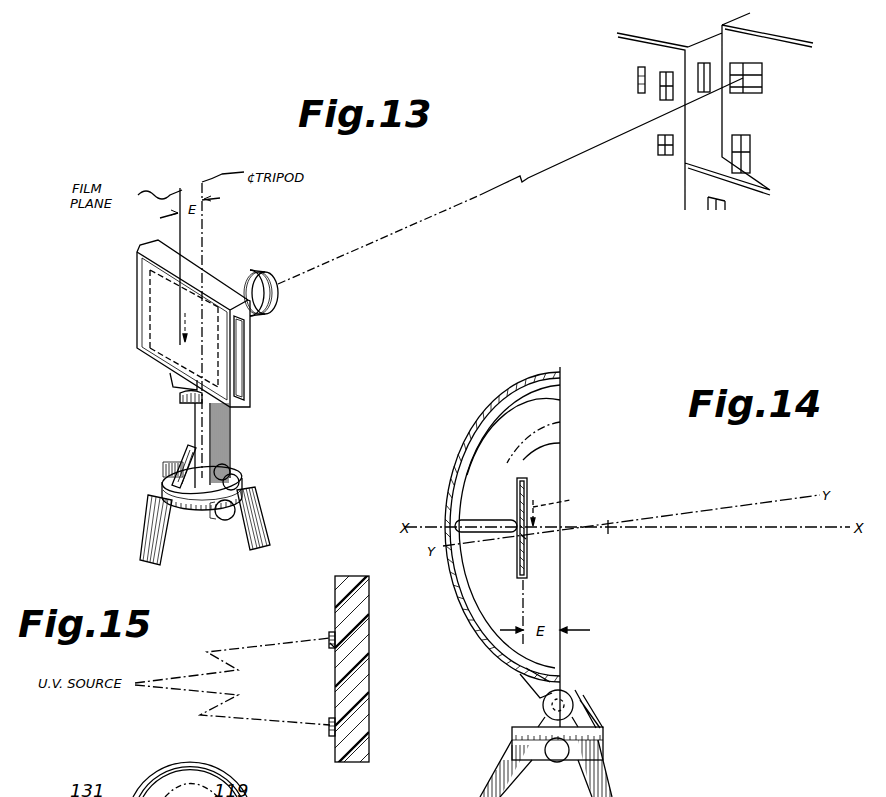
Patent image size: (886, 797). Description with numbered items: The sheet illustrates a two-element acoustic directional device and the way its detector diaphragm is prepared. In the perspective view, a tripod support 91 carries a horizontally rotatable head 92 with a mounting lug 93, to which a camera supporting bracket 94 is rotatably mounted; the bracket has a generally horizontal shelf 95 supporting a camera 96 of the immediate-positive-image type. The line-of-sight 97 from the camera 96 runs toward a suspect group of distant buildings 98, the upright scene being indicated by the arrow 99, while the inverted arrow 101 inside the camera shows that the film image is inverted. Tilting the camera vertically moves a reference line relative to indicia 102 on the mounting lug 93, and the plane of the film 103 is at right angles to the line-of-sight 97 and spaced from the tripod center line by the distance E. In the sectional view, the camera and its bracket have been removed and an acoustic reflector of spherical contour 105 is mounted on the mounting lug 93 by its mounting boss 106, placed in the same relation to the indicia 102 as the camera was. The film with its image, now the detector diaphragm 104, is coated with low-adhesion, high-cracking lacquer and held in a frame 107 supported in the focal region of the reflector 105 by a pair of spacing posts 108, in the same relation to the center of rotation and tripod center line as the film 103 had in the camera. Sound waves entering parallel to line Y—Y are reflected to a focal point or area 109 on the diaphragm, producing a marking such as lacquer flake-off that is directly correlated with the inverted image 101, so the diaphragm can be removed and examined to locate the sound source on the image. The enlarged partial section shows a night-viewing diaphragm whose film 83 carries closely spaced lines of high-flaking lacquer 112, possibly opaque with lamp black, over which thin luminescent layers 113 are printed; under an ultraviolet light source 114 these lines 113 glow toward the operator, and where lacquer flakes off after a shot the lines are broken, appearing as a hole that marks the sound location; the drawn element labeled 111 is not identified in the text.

In FIG. 15, the detector diaphragm film 83 is at (362, 724).
In FIG. 13, the tripod support 91 is at (250, 483).
In FIG. 14, the tripod support 91 is at (612, 742).
In FIG. 13, the horizontally rotatable head 92 is at (165, 466).
In FIG. 14, the horizontally rotatable head 92 is at (598, 727).
In FIG. 13, the mounting lug 93 is at (172, 484).
In FIG. 14, the mounting lug 93 is at (535, 710).
In FIG. 13, the camera supporting bracket 94 is at (226, 436).
In FIG. 13, the horizontal shelf 95 is at (168, 377).
In FIG. 13, the camera 96 is at (160, 317).
In FIG. 13, the line-of-sight 97 is at (406, 240).
In FIG. 13, the distant buildings 98 is at (663, 117).
In FIG. 13, the upright scene arrow 99 is at (743, 78).
In FIG. 13, the inverted image 101 is at (183, 327).
In FIG. 14, the inverted image 101 is at (536, 519).
In FIG. 13, the indicia 102 is at (196, 446).
In FIG. 13, the photographic film 103 is at (158, 377).
In FIG. 14, the detector diaphragm 104 is at (527, 497).
In FIG. 14, the acoustic reflector 105 is at (520, 404).
In FIG. 14, the mounting boss 106 is at (527, 681).
In FIG. 14, the frame 107 is at (530, 573).
In FIG. 14, the spacing posts 108 is at (507, 508).
In FIG. 14, the focal point marking 109 is at (521, 537).
In FIG. 15, the upper sensor 111 is at (325, 630).
In FIG. 15, the high-flaking lacquer layers 112 is at (330, 668).
In FIG. 15, the luminescent lines 113 is at (328, 645).
In FIG. 15, the ultraviolet light source 114 is at (137, 686).